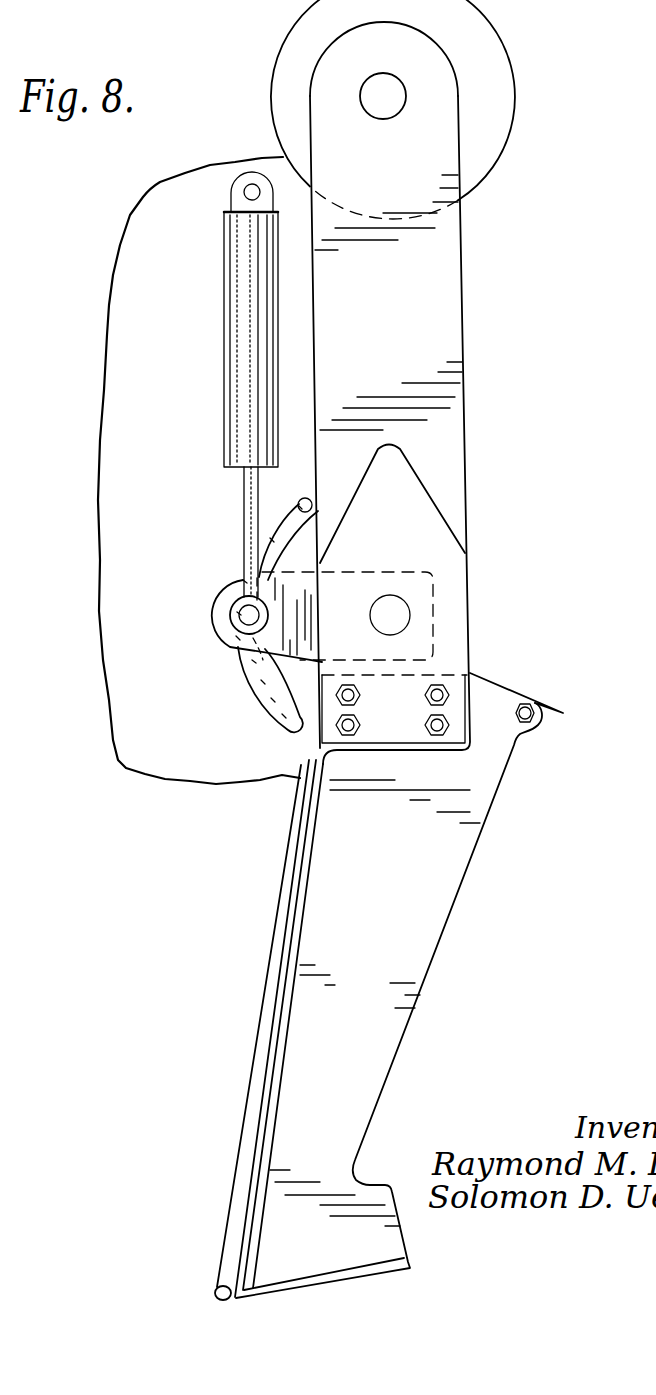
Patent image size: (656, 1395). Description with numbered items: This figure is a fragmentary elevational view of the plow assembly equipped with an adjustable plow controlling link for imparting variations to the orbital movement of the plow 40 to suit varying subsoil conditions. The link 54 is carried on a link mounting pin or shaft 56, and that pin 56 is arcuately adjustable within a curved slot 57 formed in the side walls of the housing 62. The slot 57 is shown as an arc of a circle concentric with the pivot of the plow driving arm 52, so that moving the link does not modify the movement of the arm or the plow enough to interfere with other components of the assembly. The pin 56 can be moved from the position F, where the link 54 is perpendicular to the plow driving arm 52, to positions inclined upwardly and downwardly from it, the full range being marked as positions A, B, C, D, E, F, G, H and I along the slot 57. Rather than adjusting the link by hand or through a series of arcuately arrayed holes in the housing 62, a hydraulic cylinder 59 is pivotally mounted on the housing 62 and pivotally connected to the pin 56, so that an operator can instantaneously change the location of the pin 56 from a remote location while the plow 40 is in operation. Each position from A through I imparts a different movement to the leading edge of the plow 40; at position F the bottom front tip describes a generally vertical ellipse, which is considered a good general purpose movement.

The plow 40 is at (437, 896).
The plow driving arm 52 is at (443, 318).
The link 54 is at (292, 590).
The link mounting pin 56 is at (235, 606).
The curved slot 57 is at (318, 497).
The hydraulic cylinder 59 is at (238, 252).
The housing 62 is at (108, 318).
The link position A is at (284, 716).
The link position B is at (273, 700).
The link position C is at (263, 682).
The link position D is at (254, 662).
The link position E is at (238, 638).
The link position F is at (239, 614).
The link position G is at (245, 582).
The link position H is at (272, 540).
The link position I is at (300, 508).